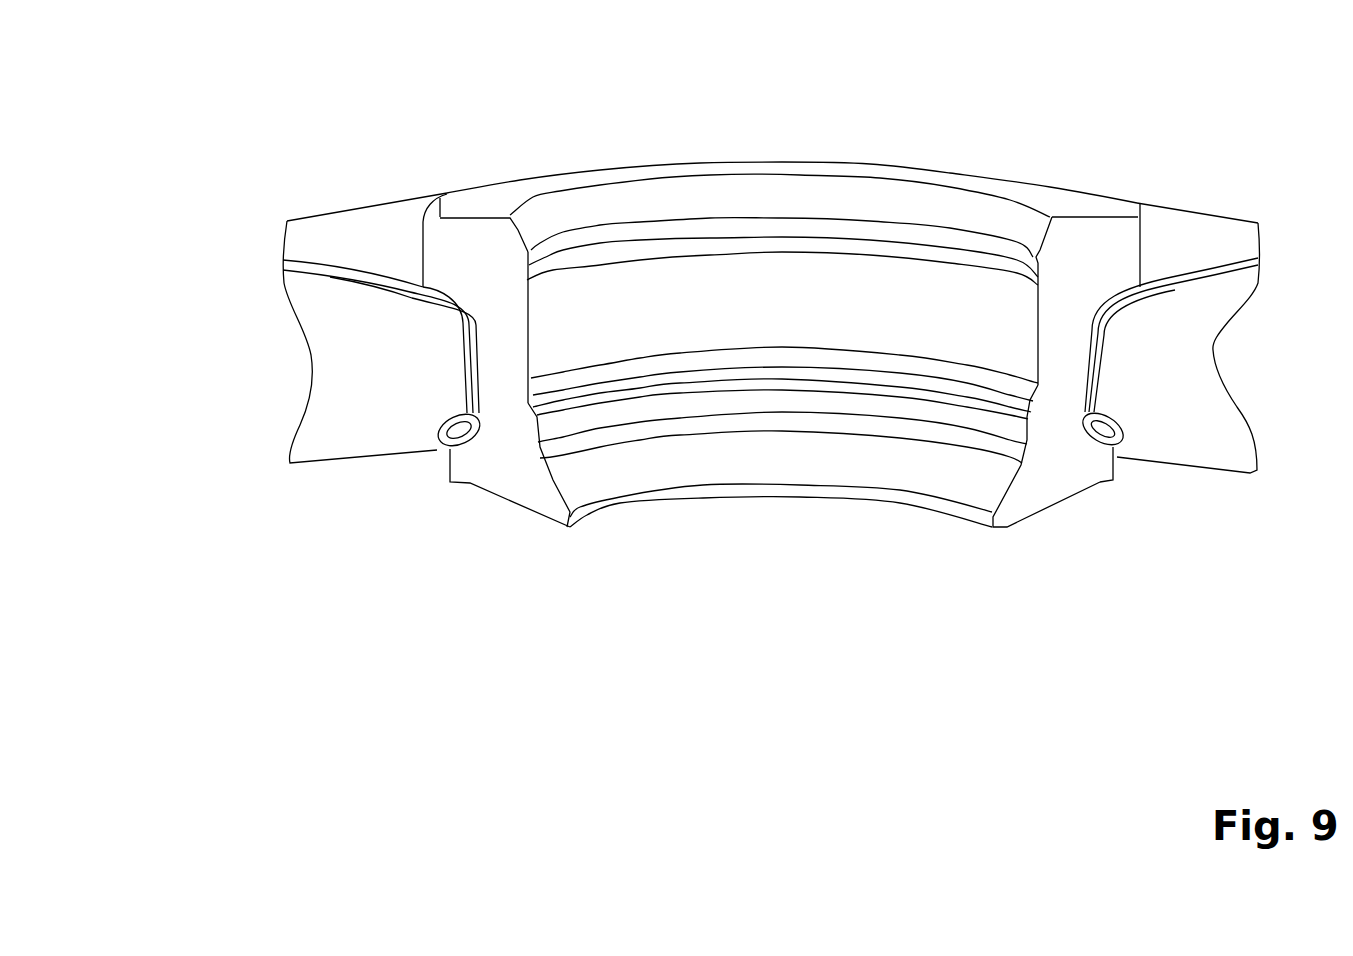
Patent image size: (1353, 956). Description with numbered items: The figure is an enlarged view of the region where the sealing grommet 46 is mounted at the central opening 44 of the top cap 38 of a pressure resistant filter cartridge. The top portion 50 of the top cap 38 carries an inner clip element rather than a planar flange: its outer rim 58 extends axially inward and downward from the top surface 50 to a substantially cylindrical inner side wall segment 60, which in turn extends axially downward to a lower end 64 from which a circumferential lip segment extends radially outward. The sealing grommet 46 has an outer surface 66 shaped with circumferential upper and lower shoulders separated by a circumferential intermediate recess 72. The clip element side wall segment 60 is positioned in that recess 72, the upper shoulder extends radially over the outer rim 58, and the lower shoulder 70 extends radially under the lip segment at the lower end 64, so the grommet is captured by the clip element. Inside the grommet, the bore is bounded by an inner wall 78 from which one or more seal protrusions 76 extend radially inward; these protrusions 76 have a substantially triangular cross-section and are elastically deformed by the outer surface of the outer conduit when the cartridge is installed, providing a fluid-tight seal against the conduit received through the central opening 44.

The top cap 38 is at (287, 227).
The central opening 44 is at (827, 126).
The sealing grommet 46 is at (752, 499).
The top portion 50 is at (1237, 96).
The outer rim 58 is at (1197, 280).
The inner side wall segment 60 is at (1122, 238).
The lower end 64 is at (1093, 417).
The outer surface 66 is at (1148, 262).
The lower shoulder 70 is at (1103, 473).
The intermediate recess 72 is at (478, 355).
The seal protrusions 76 is at (587, 248).
The inner wall 78 is at (806, 326).